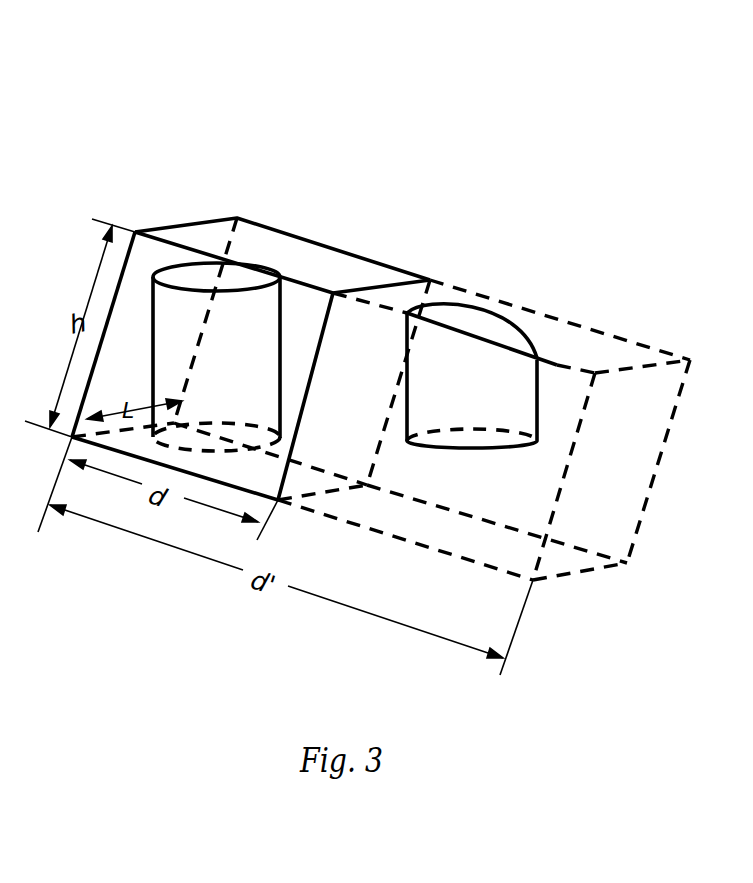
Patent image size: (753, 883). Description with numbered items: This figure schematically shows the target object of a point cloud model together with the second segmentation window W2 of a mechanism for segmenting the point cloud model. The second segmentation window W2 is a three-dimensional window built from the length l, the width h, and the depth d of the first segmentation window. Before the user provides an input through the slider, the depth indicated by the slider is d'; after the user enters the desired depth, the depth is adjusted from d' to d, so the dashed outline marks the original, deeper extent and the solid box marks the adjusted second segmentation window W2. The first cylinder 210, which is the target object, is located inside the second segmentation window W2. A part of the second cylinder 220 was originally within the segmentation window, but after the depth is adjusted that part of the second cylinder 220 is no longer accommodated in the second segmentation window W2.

The second segmentation window W2 is at (150, 175).
The first cylinder 210 is at (235, 328).
The second cylinder 220 is at (468, 327).